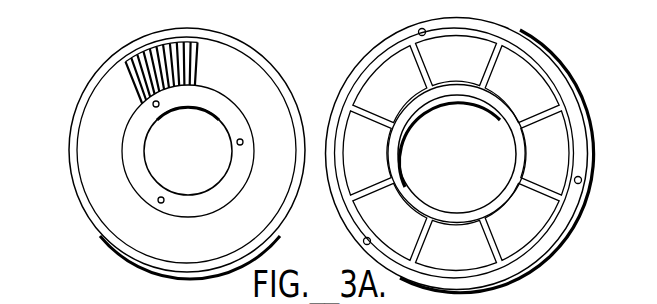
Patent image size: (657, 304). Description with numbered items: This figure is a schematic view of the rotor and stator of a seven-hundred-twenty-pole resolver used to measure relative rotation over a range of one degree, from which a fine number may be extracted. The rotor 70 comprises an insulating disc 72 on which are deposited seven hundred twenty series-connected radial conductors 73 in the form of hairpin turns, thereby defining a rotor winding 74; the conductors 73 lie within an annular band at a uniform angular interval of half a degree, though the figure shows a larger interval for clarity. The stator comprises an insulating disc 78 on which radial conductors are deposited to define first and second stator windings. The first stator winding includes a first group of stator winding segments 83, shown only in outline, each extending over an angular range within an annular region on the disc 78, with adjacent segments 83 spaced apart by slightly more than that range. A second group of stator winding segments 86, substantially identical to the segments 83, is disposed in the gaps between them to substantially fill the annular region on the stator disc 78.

The rotor 70 is at (72, 190).
The insulating disc 72 is at (233, 62).
The radial conductors 73 is at (115, 82).
The rotor winding 74 is at (198, 49).
The insulating disc 78 is at (586, 133).
The stator winding segments 83 is at (533, 97).
The stator winding segments 86 is at (457, 43).